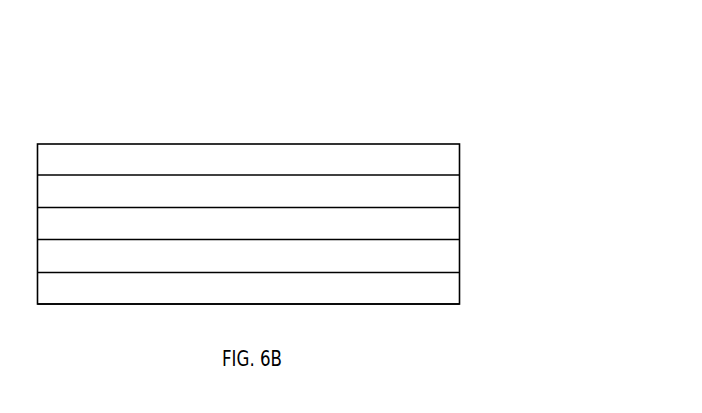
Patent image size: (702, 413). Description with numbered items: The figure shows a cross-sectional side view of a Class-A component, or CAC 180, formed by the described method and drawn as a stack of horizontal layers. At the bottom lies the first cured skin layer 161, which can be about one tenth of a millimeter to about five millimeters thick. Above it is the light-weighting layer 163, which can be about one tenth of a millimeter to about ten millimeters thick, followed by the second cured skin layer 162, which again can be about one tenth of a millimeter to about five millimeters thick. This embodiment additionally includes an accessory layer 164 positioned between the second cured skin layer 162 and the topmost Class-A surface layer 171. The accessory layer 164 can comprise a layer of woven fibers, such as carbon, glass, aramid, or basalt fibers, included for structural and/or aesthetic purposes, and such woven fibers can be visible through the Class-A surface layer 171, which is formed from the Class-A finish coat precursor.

The CAC 180 is at (468, 123).
The Class-A surface layer 171 is at (443, 158).
The accessory layer 164 is at (443, 192).
The second cured skin layer 162 is at (443, 227).
The light-weighting layer 163 is at (443, 257).
The first cured skin layer 161 is at (443, 287).